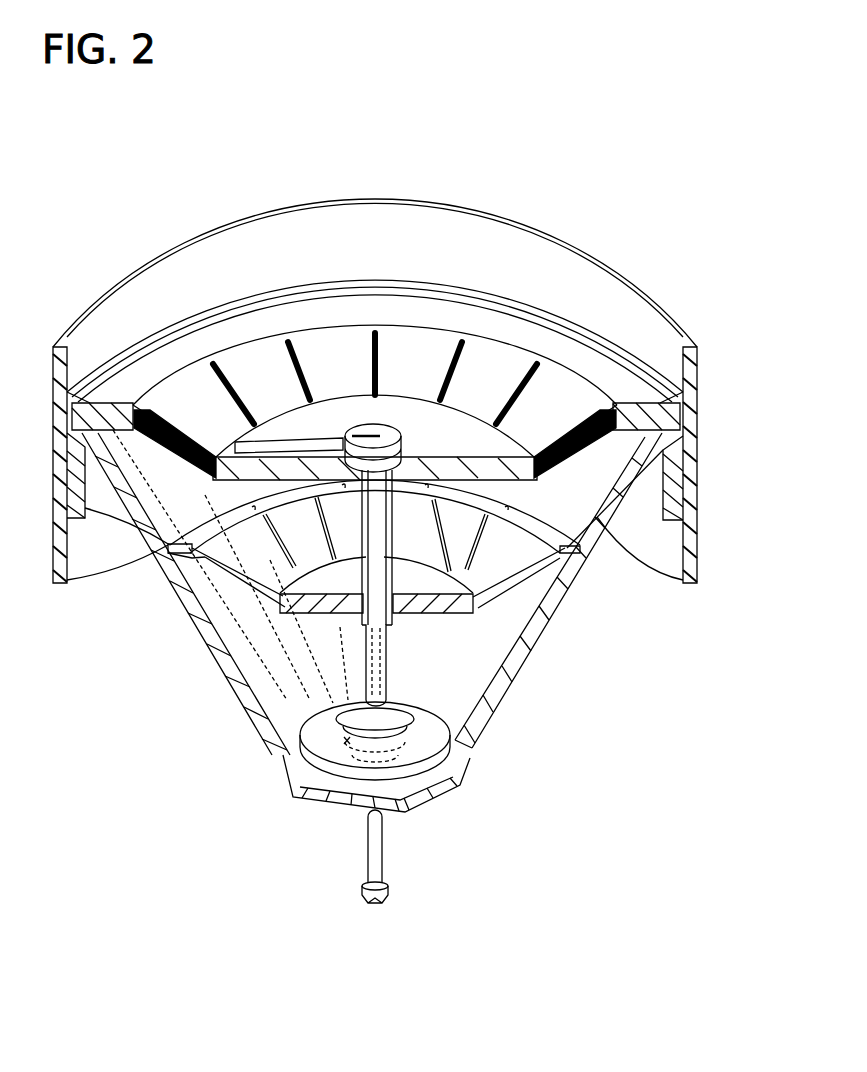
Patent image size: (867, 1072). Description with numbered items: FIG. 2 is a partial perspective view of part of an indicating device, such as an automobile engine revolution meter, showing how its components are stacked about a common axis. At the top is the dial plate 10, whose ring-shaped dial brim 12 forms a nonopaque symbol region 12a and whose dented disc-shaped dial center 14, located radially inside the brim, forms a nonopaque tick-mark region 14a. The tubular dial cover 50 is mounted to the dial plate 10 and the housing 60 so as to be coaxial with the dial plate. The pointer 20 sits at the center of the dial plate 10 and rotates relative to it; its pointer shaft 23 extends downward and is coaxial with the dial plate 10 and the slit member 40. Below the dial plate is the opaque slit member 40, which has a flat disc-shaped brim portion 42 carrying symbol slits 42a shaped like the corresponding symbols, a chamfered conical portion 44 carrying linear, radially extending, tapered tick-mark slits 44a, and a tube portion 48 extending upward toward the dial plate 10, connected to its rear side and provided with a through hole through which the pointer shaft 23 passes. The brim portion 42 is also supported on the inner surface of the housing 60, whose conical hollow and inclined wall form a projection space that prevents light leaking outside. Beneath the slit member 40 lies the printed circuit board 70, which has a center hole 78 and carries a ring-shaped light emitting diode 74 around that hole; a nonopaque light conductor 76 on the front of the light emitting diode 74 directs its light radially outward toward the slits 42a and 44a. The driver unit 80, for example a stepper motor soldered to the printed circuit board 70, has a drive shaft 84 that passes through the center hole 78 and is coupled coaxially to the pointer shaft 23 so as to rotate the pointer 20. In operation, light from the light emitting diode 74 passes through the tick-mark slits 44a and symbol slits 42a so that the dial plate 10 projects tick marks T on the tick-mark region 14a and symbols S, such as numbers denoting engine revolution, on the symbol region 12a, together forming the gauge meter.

The dial plate 10 is at (482, 283).
The dial cover 50 is at (668, 306).
The dial brim 12 is at (594, 370).
The symbol region 12a is at (110, 392).
The dial center 14 is at (530, 348).
The tick-mark region 14a is at (193, 400).
The tick marks T is at (227, 363).
The symbols S is at (106, 388).
The pointer 20 is at (404, 434).
The pointer shaft 23 is at (376, 634).
The conical portion 44 is at (505, 545).
The tick-mark slits 44a is at (249, 506).
The tube portion 48 is at (410, 578).
The brim portion 42 is at (565, 556).
The symbol slits 42a is at (186, 553).
The slit member 40 is at (494, 603).
The housing 60 is at (676, 586).
The printed circuit board 70 is at (478, 767).
The light emitting diode 74 is at (368, 799).
The light conductor 76 is at (306, 739).
The center hole 78 is at (398, 760).
The drive shaft 84 is at (384, 850).
The driver unit 80 is at (394, 893).